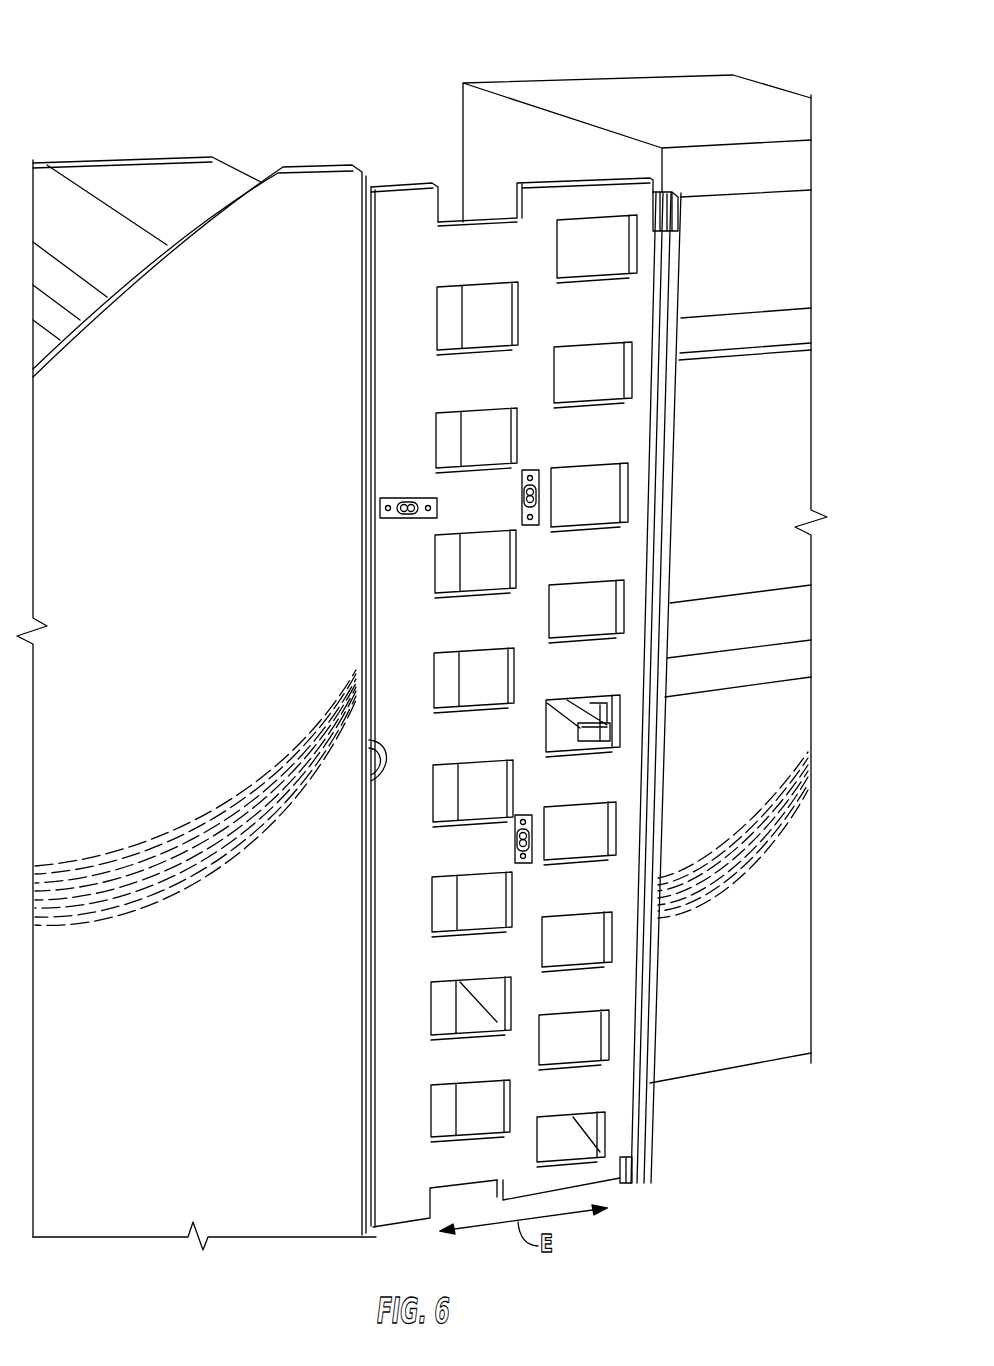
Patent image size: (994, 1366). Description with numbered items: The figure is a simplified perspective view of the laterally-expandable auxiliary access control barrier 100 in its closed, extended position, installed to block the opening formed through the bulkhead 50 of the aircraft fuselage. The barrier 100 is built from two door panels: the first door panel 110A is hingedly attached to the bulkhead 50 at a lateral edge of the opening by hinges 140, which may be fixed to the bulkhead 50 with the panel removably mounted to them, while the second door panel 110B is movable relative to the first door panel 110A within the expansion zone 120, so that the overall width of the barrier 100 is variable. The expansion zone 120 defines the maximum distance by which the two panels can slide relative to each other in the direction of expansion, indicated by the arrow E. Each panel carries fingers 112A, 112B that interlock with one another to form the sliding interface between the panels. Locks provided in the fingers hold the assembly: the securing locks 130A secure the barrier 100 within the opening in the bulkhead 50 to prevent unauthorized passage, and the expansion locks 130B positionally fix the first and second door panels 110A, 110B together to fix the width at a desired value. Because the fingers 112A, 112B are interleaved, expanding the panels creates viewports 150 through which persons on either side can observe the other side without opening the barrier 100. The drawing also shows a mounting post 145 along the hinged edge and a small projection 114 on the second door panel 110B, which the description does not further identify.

The auxiliary access control barrier 100 is at (265, 53).
The expansion zone 120 is at (497, 172).
The bulkhead 50 is at (742, 541).
The first door panel 110A is at (635, 308).
The second door panel 110B is at (398, 315).
The fingers of first door panel 112A is at (527, 995).
The fingers of second door panel 112B is at (527, 937).
The handle 114 is at (375, 780).
The securing lock 130A is at (403, 522).
The expansion lock 130B is at (523, 495).
The hinge 140 is at (667, 212).
The mounting post 145 is at (662, 447).
The viewport 150 is at (472, 1106).